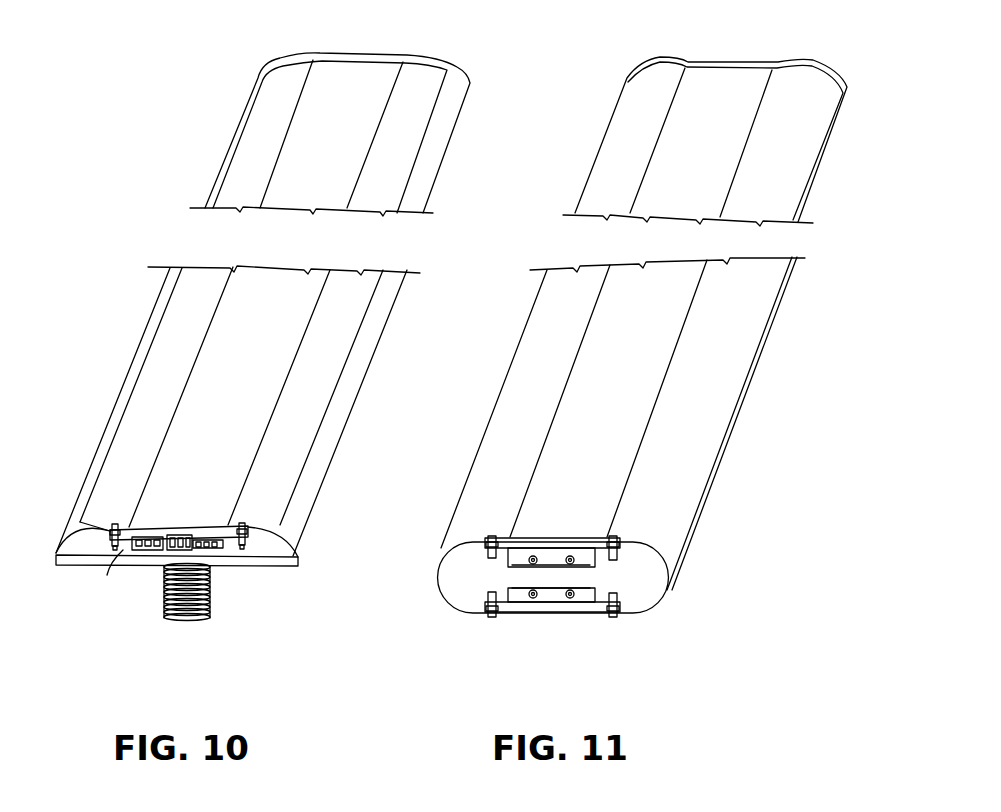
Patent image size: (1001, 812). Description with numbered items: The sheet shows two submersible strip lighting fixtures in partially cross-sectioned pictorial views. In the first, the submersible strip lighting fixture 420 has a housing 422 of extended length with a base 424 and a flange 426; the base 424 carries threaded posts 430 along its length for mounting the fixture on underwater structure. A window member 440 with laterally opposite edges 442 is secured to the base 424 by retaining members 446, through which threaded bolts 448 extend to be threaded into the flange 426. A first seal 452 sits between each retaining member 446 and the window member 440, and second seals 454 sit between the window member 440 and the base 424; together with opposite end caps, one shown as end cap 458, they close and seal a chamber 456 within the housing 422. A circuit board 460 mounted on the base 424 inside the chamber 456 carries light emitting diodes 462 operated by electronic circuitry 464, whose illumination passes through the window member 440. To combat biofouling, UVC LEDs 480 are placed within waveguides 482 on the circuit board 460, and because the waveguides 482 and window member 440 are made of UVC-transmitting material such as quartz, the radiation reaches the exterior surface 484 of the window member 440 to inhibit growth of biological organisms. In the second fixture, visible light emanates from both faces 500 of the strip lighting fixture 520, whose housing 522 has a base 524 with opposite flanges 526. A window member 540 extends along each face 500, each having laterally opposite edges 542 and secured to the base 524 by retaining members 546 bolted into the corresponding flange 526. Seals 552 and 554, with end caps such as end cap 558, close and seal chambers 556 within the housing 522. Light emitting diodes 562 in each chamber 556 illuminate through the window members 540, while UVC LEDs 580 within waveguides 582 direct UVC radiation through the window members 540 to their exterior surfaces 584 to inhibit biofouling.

In FIG. 10, the submersible strip lighting fixture 420 is at (160, 293).
In FIG. 10, the housing 422 is at (148, 328).
In FIG. 10, the base 424 is at (70, 553).
In FIG. 10, the flange 426 is at (88, 540).
In FIG. 10, the threaded posts 430 is at (178, 610).
In FIG. 10, the window member 440 is at (210, 367).
In FIG. 10, the laterally opposite edges 442 is at (80, 517).
In FIG. 10, the retaining members 446 is at (158, 357).
In FIG. 10, the threaded bolts 448 is at (252, 527).
In FIG. 10, the first seal 452 is at (132, 525).
In FIG. 10, the second seals 454 is at (100, 577).
In FIG. 10, the chamber 456 is at (147, 525).
In FIG. 10, the end cap 458 is at (366, 56).
In FIG. 10, the circuit board 460 is at (228, 553).
In FIG. 10, the light emitting diodes 462 is at (218, 553).
In FIG. 10, the electronic circuitry 464 is at (197, 540).
In FIG. 10, the UVC LEDs 480 is at (157, 547).
In FIG. 10, the waveguides 482 is at (180, 535).
In FIG. 10, the exterior surface 484 is at (284, 312).
In FIG. 11, the faces 500 is at (498, 538).
In FIG. 11, the strip lighting fixture 520 is at (538, 290).
In FIG. 11, the housing 522 is at (447, 572).
In FIG. 11, the base 524 is at (448, 591).
In FIG. 11, the opposite flanges 526 is at (448, 555).
In FIG. 11, the window member 540 is at (665, 330).
In FIG. 11, the laterally opposite edges 542 is at (457, 545).
In FIG. 11, the retaining members 546 is at (530, 317).
In FIG. 11, the seals 552 is at (502, 537).
In FIG. 11, the seals 554 is at (653, 605).
In FIG. 11, the chambers 556 is at (617, 543).
In FIG. 11, the end cap 558 is at (736, 60).
In FIG. 11, the light emitting diodes 562 is at (590, 560).
In FIG. 11, the UVC LEDs 580 is at (548, 548).
In FIG. 11, the waveguides 582 is at (576, 553).
In FIG. 11, the exterior surfaces 584 is at (656, 300).